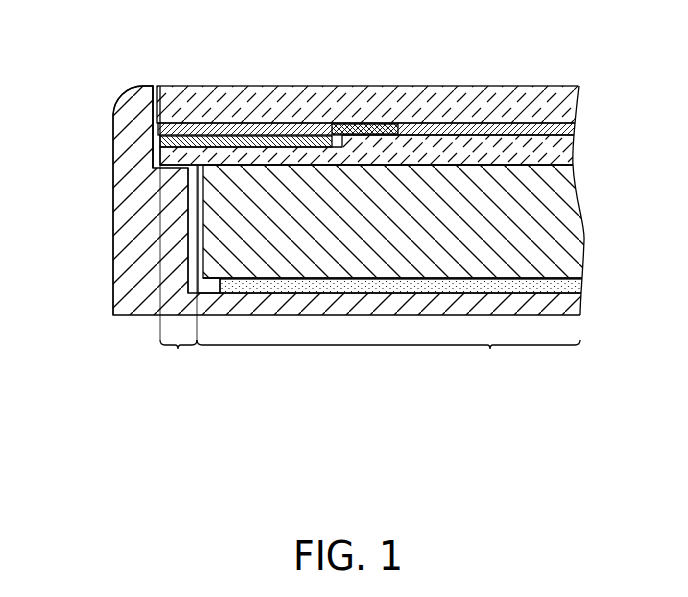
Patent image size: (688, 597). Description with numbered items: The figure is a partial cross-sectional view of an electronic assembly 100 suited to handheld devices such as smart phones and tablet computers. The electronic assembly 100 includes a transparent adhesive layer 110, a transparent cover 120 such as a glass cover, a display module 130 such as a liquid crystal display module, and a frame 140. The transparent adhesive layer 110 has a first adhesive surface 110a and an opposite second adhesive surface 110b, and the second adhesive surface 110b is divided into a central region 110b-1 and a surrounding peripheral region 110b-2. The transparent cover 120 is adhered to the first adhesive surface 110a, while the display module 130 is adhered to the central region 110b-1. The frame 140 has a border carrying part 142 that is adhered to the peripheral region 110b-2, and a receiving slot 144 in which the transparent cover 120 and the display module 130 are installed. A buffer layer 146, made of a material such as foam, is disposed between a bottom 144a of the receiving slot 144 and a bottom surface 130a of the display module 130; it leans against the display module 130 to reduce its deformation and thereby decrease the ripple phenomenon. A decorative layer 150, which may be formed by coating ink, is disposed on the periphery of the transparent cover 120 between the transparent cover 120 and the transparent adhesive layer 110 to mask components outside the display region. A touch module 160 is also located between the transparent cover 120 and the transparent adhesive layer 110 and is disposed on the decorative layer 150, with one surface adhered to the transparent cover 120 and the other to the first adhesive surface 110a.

The electronic assembly 100 is at (100, 75).
The transparent adhesive layer 110 is at (563, 150).
The first adhesive surface 110a is at (543, 129).
The second adhesive surface 110b is at (539, 166).
The central region 110b-1 is at (388, 361).
The peripheral region 110b-2 is at (178, 272).
The transparent cover 120 is at (560, 103).
The display module 130 is at (560, 228).
The bottom surface of the display module 130a is at (512, 294).
The frame 140 is at (130, 230).
The border carrying part 142 is at (160, 172).
The receiving slot 144 is at (161, 110).
The bottom of the receiving slot 144a is at (468, 277).
The buffer layer 146 is at (578, 286).
The decorative layer 150 is at (233, 123).
The touch module 160 is at (392, 125).